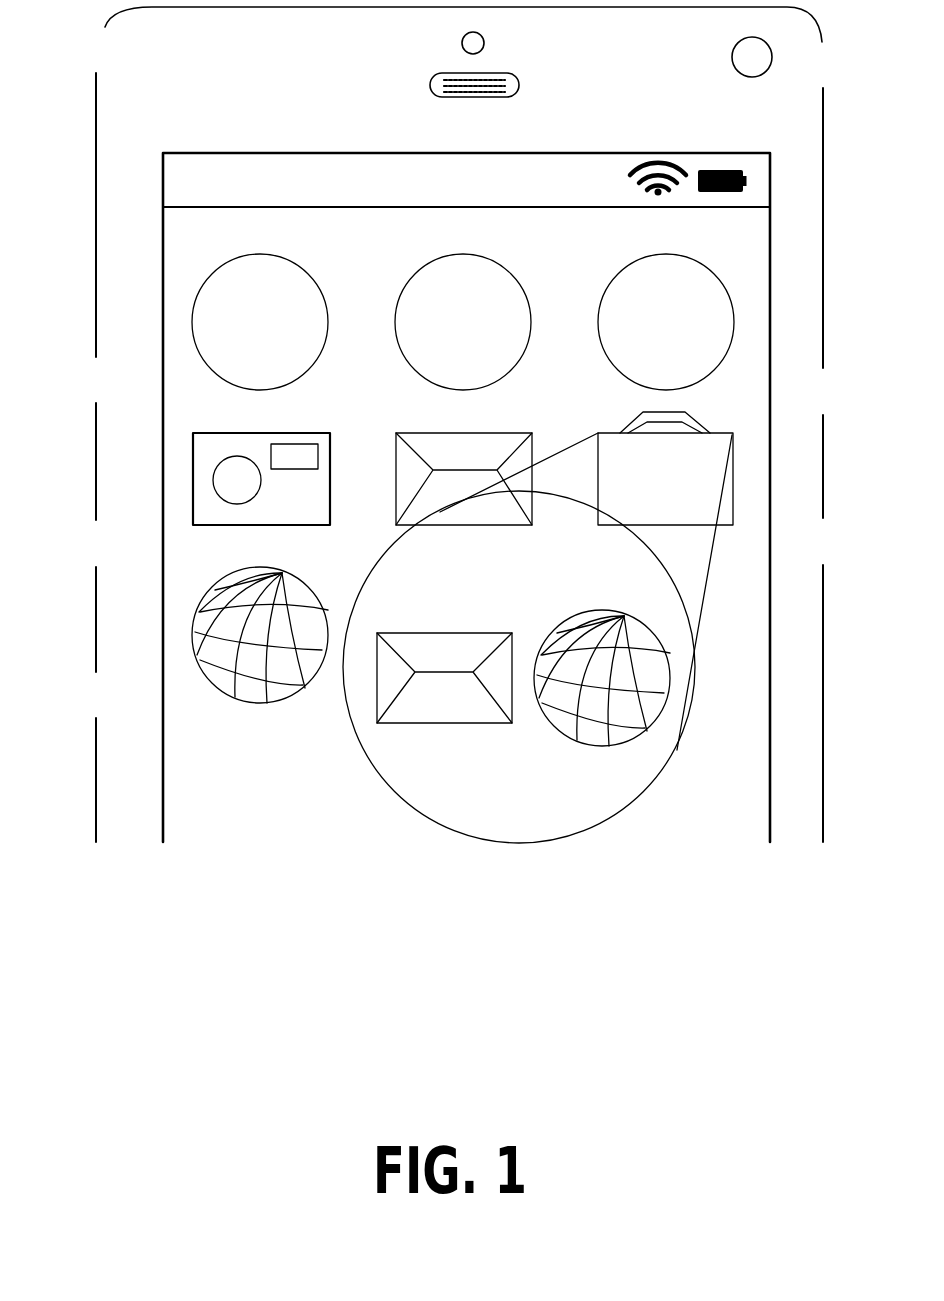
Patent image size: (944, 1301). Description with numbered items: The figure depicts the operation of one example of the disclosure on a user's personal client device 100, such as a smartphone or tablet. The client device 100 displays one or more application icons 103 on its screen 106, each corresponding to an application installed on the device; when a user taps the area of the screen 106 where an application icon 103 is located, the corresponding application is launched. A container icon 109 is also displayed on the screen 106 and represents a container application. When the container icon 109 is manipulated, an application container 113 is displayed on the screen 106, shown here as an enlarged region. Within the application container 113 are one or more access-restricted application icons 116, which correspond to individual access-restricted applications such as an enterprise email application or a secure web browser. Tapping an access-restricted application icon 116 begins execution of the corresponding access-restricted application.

The client device 100 is at (126, 119).
The application icons 103 is at (186, 337).
The screen 106 is at (713, 153).
The container icon 109 is at (737, 495).
The application container 113 is at (543, 560).
The access-restricted application icons 116 is at (410, 727).